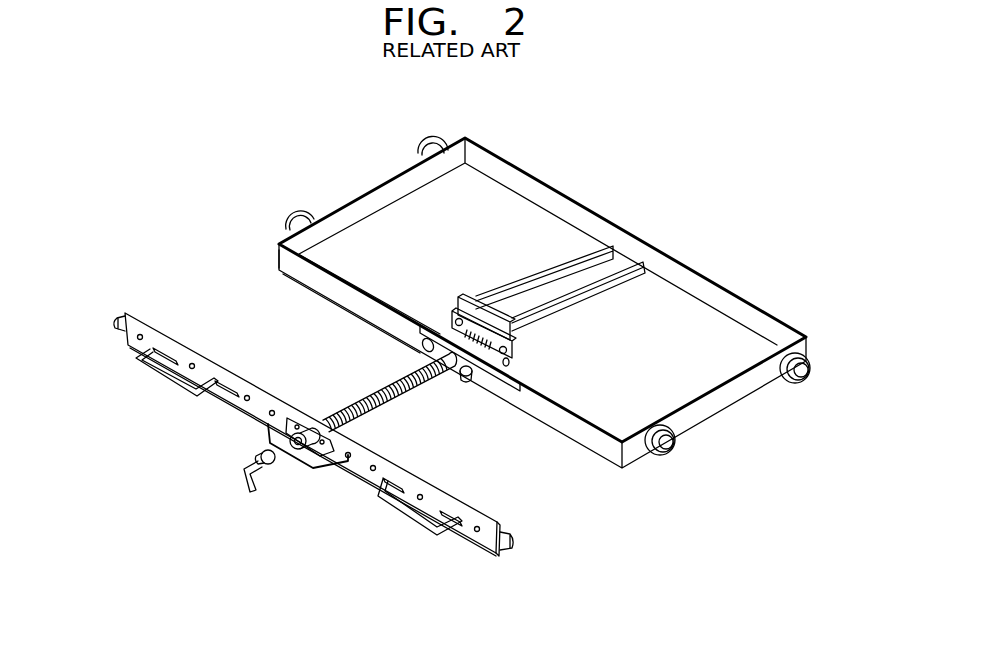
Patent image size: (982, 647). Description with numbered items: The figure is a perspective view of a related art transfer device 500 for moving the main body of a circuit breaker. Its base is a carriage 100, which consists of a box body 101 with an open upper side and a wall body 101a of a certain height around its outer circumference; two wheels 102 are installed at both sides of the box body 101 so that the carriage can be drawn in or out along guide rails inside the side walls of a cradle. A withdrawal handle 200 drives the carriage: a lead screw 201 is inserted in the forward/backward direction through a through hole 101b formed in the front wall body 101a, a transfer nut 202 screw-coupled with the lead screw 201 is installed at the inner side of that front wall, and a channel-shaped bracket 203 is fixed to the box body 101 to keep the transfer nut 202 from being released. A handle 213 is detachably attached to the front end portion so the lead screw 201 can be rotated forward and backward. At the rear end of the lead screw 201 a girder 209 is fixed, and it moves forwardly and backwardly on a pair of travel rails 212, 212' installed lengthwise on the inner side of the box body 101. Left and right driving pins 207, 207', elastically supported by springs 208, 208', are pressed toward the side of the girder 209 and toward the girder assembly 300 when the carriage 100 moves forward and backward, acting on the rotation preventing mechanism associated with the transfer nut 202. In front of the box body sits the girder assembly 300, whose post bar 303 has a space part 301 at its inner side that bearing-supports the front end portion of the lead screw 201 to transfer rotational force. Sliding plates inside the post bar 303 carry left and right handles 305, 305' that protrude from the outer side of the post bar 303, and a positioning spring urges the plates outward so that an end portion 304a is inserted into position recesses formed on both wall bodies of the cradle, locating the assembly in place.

The carriage 100 is at (350, 168).
The box body 101 is at (337, 205).
The wall body 101a is at (400, 166).
The through hole 101b is at (447, 372).
The wheels 102 is at (428, 142).
The withdrawal handle 200 is at (412, 398).
The lead screw 201 is at (367, 412).
The transfer nut 202 is at (461, 298).
The channel-shaped bracket 203 is at (467, 377).
The left driving pin 207 is at (410, 353).
The right driving pin 207' is at (521, 399).
The spring 208 is at (385, 349).
The spring 208' is at (629, 402).
The girder 209 is at (468, 298).
The travel rail 212 is at (568, 244).
The travel rail 212' is at (609, 269).
The handle 213 is at (248, 483).
The girder assembly 300 is at (470, 552).
The space part 301 is at (500, 513).
The post bar 303 is at (346, 476).
The end portion 304a is at (117, 318).
The left handle 305 is at (162, 388).
The right handle 305' is at (406, 522).
The transfer device 500 is at (719, 259).